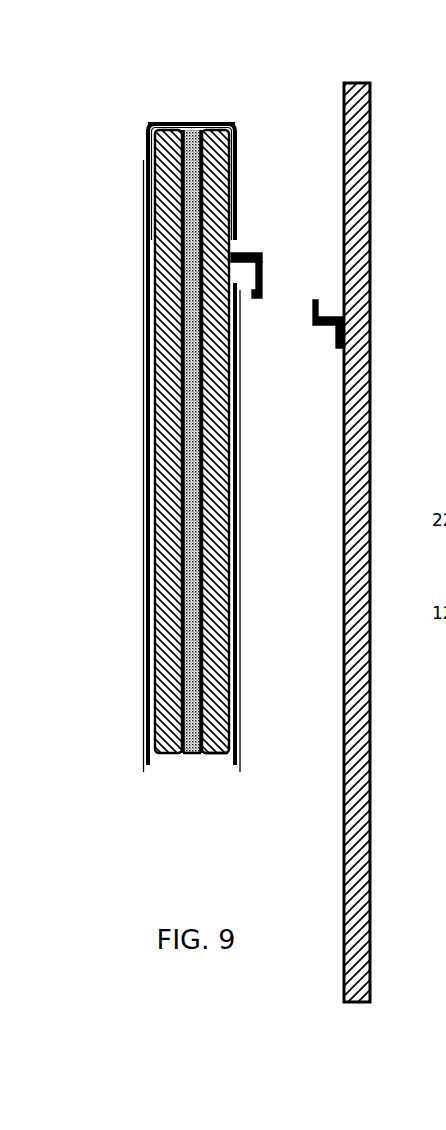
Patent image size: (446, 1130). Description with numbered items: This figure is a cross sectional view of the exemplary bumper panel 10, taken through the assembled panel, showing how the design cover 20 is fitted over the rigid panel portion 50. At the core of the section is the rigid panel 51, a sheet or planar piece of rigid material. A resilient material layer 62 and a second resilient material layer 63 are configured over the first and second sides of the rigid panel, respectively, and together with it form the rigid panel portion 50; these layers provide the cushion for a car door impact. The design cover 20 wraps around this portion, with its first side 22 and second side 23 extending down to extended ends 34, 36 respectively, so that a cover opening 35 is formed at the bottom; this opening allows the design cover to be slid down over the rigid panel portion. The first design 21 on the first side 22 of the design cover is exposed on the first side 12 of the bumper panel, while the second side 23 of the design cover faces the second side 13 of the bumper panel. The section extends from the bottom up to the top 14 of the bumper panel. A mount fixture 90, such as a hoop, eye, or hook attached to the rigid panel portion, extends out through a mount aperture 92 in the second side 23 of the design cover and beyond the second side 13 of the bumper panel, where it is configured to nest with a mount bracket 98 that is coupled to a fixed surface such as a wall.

The bumper panel 10 is at (153, 113).
The first side of the bumper panel 12 is at (145, 602).
The second side of the bumper panel 13 is at (240, 603).
The top 14 is at (203, 119).
The design cover 20 is at (145, 410).
The first design 21 is at (145, 456).
The first side of the design cover 22 is at (145, 515).
The second side of the design cover 23 is at (240, 407).
The extended end 34 is at (148, 766).
The cover opening 35 is at (205, 763).
The extended end 36 is at (236, 768).
The rigid panel portion 50 is at (150, 166).
The rigid panel 51 is at (187, 757).
The resilient material layer 62 is at (150, 232).
The second resilient material layer 63 is at (214, 206).
The mount fixture 90 is at (262, 280).
The mount aperture 92 is at (236, 250).
The mount bracket 98 is at (313, 322).